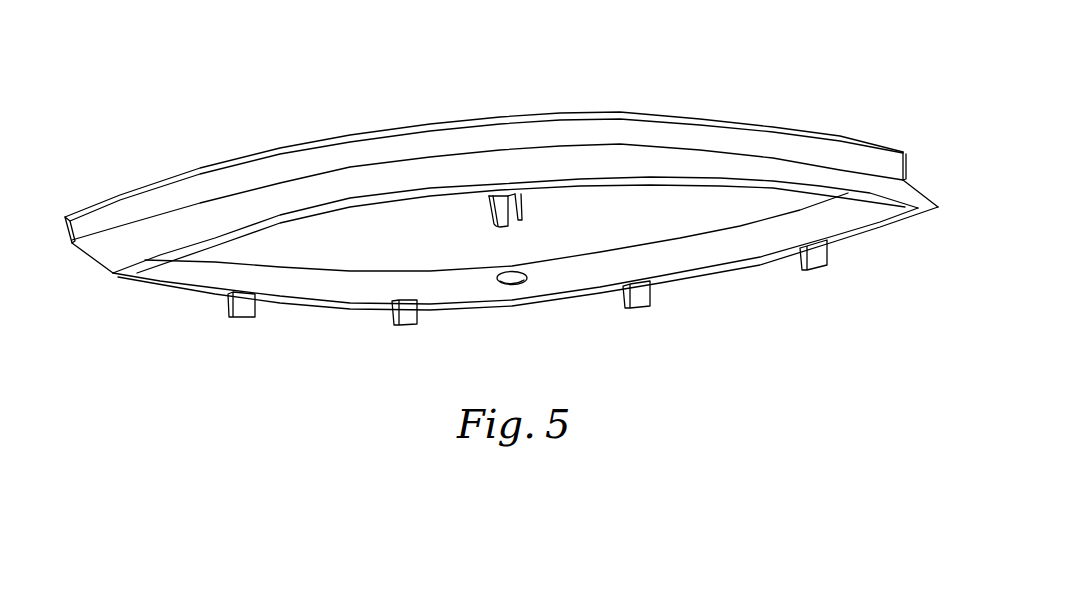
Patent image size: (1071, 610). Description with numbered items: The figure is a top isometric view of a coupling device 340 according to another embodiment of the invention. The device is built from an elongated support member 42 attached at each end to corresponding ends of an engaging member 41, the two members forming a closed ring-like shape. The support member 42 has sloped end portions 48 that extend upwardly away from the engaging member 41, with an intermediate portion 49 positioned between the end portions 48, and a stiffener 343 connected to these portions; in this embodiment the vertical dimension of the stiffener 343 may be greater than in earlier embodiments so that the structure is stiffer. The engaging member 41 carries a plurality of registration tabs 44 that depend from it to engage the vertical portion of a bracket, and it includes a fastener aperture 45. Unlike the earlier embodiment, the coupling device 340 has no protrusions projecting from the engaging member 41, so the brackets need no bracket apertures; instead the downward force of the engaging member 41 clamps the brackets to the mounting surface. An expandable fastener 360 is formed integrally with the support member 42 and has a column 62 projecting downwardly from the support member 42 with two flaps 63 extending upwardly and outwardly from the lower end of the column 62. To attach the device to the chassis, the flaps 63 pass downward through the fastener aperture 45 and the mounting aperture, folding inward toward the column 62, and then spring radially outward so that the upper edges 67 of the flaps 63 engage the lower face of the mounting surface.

The coupling device 340 is at (501, 203).
The stiffener 343 is at (188, 172).
The sloped end portions 48 is at (233, 210).
The support member 42 is at (118, 252).
The intermediate portion 49 is at (466, 180).
The engaging member 41 is at (216, 276).
The registration tabs 44 is at (244, 317).
The fastener aperture 45 is at (527, 278).
The expandable fastener 360 is at (540, 166).
The flaps 63 is at (490, 210).
The column 62 is at (513, 190).
The upper edges 67 is at (489, 197).